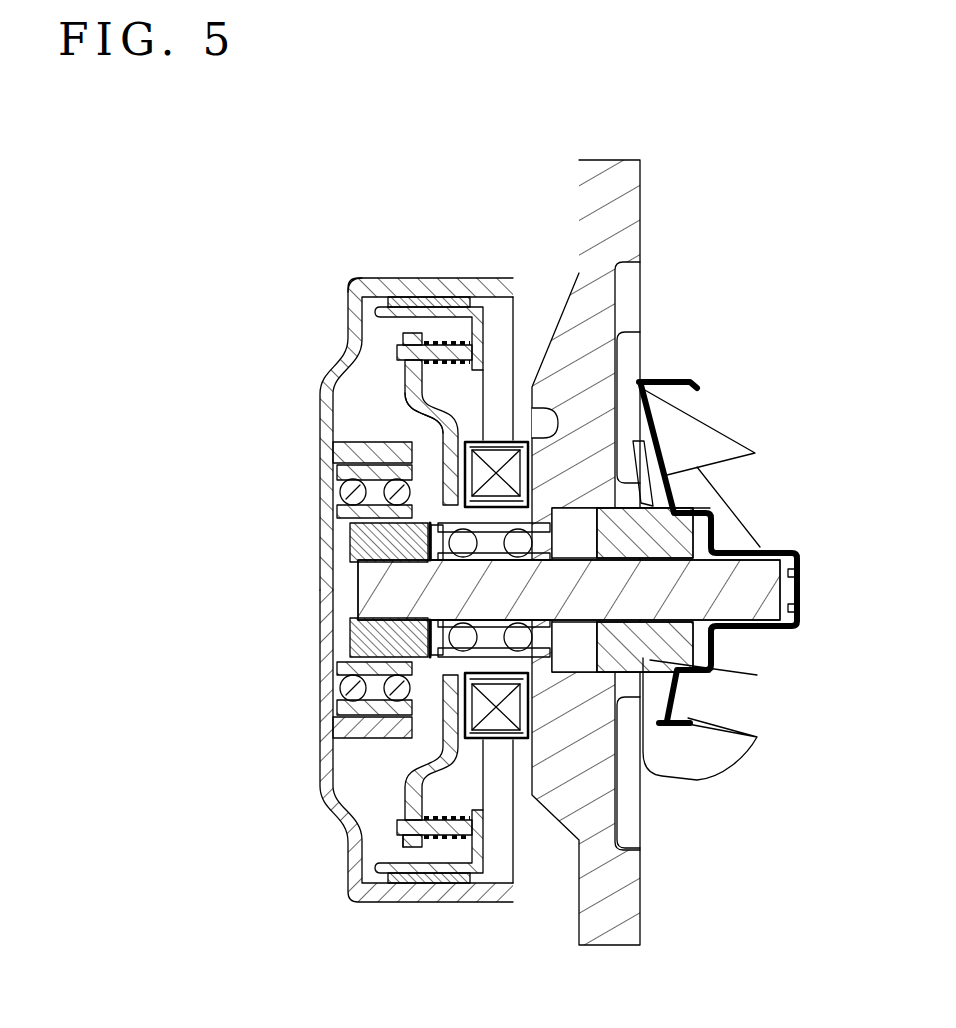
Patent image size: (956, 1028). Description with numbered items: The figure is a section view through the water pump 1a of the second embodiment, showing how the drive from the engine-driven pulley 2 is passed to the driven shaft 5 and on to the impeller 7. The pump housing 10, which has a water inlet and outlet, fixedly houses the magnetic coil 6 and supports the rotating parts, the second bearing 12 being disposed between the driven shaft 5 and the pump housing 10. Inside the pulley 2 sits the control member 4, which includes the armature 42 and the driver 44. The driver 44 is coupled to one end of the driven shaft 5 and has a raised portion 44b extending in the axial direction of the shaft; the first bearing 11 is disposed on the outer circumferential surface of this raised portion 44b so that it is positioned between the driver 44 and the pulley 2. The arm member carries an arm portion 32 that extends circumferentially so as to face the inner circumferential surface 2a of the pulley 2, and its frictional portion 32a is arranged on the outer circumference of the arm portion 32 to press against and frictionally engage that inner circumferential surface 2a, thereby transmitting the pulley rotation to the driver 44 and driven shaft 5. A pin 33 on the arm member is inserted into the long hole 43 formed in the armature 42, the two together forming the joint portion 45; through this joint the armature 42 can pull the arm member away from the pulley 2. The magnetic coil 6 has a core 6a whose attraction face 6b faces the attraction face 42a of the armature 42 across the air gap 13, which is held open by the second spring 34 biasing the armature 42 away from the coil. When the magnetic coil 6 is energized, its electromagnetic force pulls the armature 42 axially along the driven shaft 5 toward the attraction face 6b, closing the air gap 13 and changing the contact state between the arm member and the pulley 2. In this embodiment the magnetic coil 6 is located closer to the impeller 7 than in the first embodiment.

The water pump 1a is at (688, 192).
The pump housing 10 is at (598, 188).
The driven shaft 5 is at (727, 594).
The impeller 7 is at (705, 440).
The control member 4 is at (255, 377).
The pulley 2 is at (426, 290).
The inner circumferential surface 2a is at (397, 323).
The air gap 13 is at (461, 340).
The arm portion 32 is at (386, 868).
The frictional portion 32a is at (408, 882).
The pin 33 is at (447, 838).
The second spring 34 is at (467, 838).
The long hole 43 is at (410, 820).
The armature 42 is at (425, 770).
The attraction face 42a is at (435, 437).
The joint portion 45 is at (390, 840).
The magnetic coil 6 is at (340, 492).
The core 6a is at (385, 508).
The attraction face 6b is at (413, 460).
The driver 44 is at (382, 637).
The raised portion 44b is at (380, 538).
The second bearing 12 is at (533, 650).
The first bearing 11 is at (413, 667).